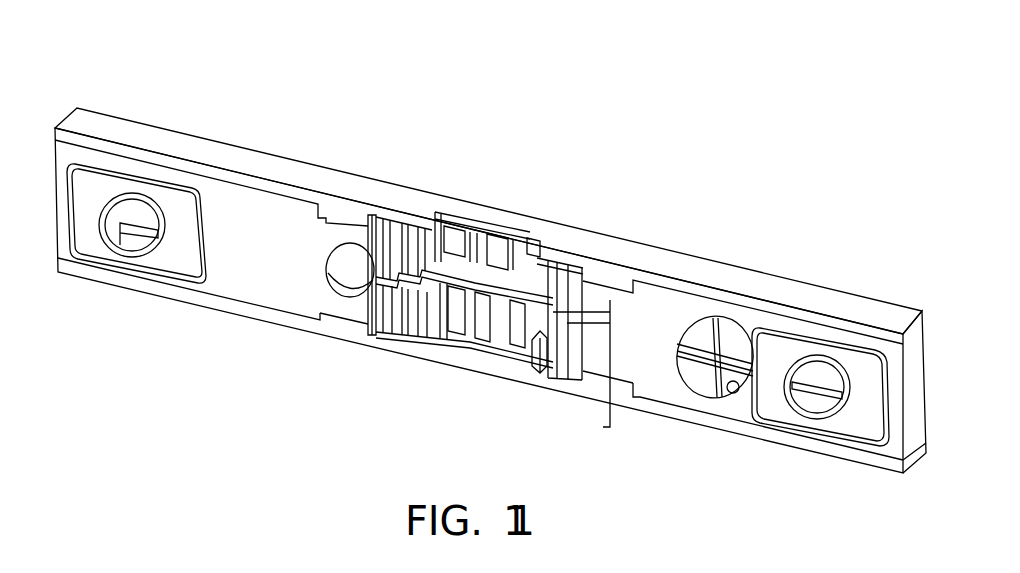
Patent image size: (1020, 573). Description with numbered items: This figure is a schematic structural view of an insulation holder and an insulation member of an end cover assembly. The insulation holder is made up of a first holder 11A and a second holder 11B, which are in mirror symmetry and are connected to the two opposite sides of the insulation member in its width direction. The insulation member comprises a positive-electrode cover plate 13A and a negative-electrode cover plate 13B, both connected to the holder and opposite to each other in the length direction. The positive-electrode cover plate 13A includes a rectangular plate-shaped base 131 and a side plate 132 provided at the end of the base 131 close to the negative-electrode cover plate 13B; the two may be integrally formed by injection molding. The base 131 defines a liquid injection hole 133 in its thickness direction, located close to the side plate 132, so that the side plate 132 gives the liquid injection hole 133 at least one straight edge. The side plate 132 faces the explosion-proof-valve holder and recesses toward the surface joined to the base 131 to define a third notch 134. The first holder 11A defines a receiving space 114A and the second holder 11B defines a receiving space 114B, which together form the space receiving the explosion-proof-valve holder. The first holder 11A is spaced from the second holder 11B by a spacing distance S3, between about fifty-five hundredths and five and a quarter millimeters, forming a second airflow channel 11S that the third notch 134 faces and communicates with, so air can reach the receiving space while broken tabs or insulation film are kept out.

The first holder 11A is at (193, 152).
The second holder 11B is at (85, 272).
The positive-electrode cover plate 13A is at (260, 215).
The negative-electrode cover plate 13B is at (667, 318).
The base 131 is at (233, 278).
The side plate 132 is at (376, 243).
The liquid injection hole 133 is at (340, 290).
The third notch 134 is at (369, 281).
The second airflow channel 11S is at (477, 272).
The receiving space 114A is at (505, 272).
The receiving space 114B is at (467, 322).
The spacing distance S3 is at (581, 371).